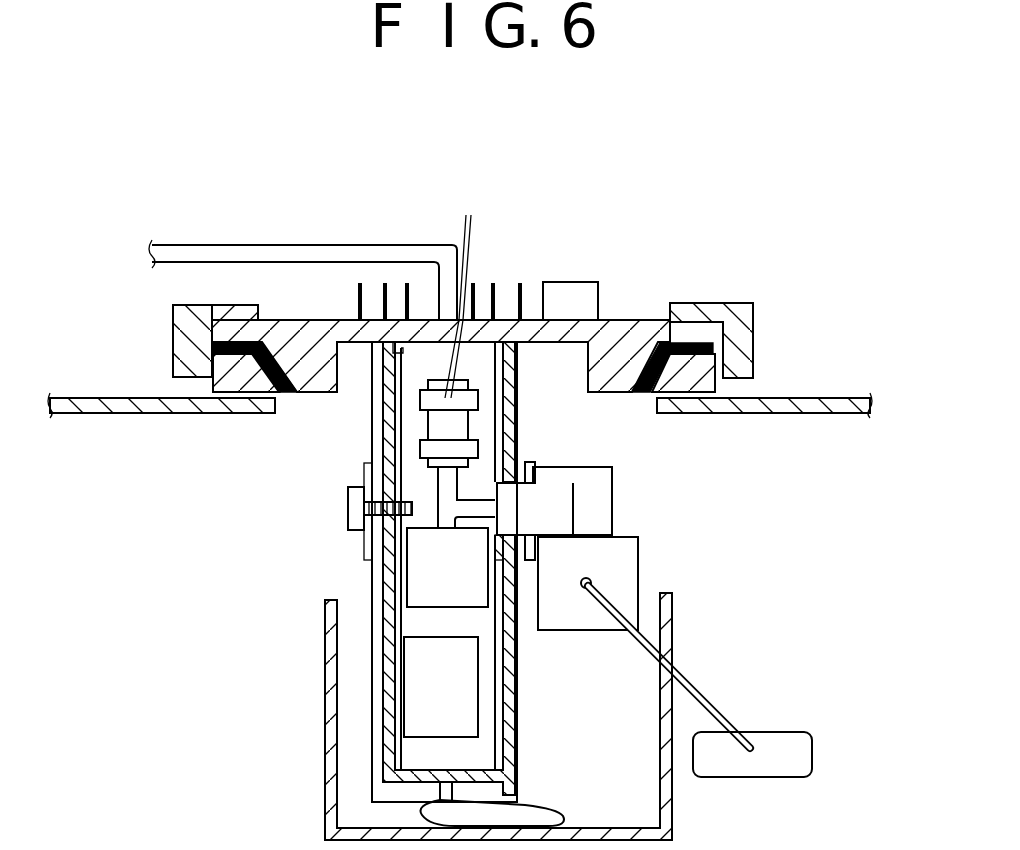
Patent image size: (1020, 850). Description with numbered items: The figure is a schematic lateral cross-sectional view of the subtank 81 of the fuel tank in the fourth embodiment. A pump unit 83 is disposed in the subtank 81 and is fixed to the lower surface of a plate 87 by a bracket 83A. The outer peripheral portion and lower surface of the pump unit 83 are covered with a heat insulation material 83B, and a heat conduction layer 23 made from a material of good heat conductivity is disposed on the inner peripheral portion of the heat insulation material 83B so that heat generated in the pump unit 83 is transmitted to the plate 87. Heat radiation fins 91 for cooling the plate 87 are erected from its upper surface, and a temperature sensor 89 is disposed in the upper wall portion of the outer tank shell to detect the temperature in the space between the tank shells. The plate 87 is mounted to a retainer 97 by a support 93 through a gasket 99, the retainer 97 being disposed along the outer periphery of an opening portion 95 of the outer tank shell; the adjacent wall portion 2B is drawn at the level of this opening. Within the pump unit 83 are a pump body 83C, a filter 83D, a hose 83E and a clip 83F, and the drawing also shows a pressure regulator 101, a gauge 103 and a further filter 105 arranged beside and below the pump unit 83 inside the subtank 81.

The fuel tank upper wall 2B is at (838, 397).
The heat conduction layer 23 is at (380, 633).
The subtank 81 is at (678, 637).
The pump unit 83 is at (332, 572).
The bracket 83A is at (363, 395).
The heat insulation material 83B is at (368, 667).
The pump body 83C is at (483, 717).
The filter 83D is at (423, 558).
The hose 83E is at (437, 423).
The clip 83F is at (455, 284).
The plate 87 is at (623, 320).
The temperature sensor 89 is at (562, 282).
The heat radiation fins 91 is at (500, 283).
The support 93 is at (747, 303).
The opening portion 95 is at (653, 398).
The retainer 97 is at (712, 390).
The gasket 99 is at (635, 392).
The pressure regulator 101 is at (555, 508).
The gauge 103 is at (610, 572).
The filter 105 is at (537, 807).